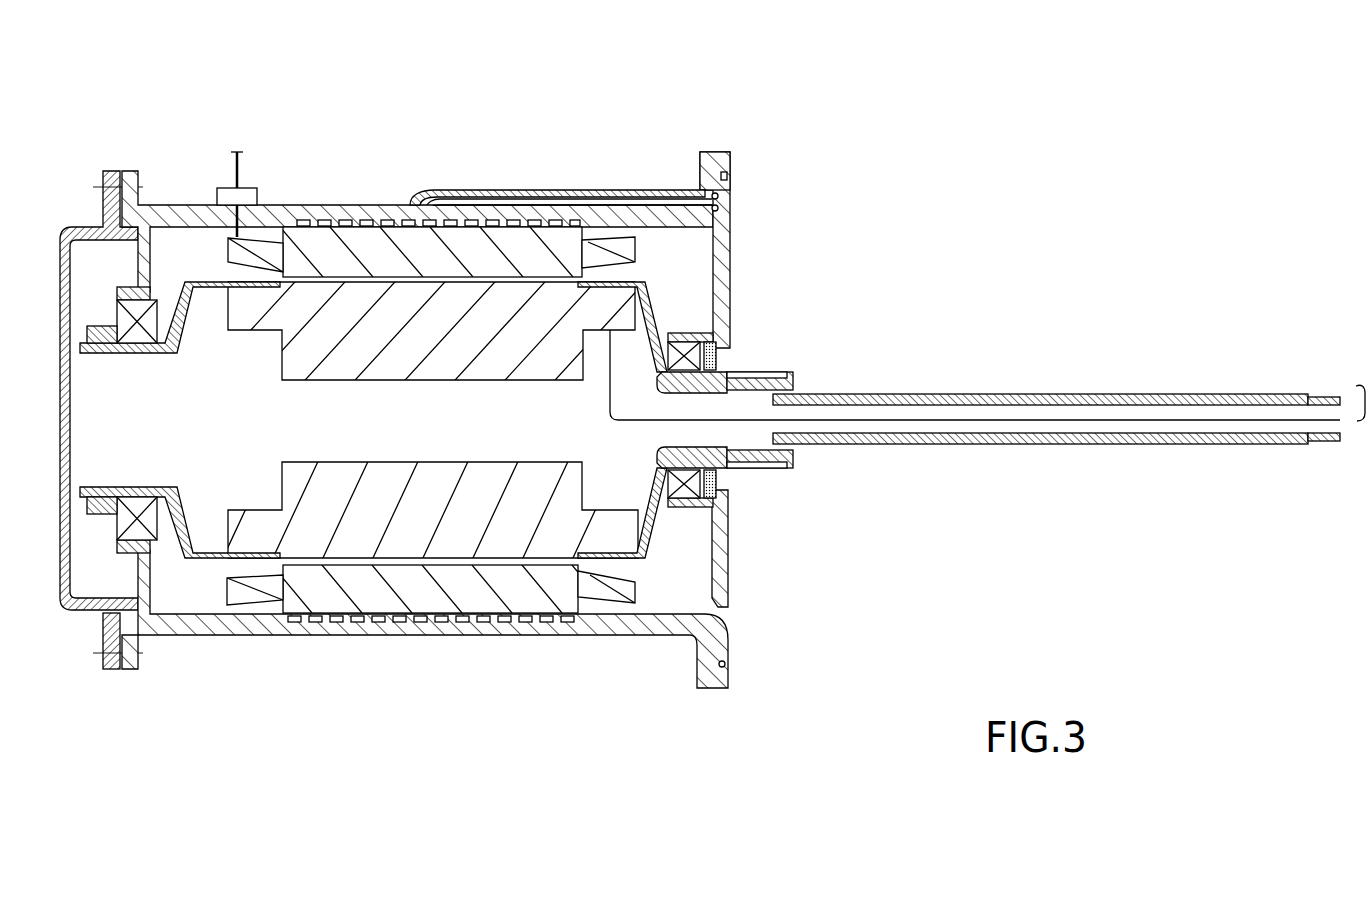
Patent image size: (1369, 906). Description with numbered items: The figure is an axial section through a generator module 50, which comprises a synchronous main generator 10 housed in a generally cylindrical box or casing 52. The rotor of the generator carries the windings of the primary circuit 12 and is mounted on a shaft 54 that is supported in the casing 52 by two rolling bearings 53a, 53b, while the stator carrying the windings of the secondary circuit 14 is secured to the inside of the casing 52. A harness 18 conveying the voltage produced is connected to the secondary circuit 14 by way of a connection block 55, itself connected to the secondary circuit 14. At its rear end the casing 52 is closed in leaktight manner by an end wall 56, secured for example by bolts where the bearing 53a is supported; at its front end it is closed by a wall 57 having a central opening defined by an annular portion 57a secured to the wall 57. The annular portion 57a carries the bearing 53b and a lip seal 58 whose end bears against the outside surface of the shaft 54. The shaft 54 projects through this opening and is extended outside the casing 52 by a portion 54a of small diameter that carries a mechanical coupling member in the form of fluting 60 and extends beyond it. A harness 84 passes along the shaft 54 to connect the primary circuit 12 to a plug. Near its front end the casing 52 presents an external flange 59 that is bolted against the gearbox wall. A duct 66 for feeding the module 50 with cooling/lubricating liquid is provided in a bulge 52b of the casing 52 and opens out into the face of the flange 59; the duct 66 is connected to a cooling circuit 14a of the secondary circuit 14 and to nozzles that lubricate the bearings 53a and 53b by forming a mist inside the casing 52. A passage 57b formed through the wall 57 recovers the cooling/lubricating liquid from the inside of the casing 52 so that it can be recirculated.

The synchronous main generator 10 is at (210, 580).
The primary circuit 12 is at (478, 352).
The secondary circuit 14 is at (442, 605).
The cooling circuit 14a is at (387, 218).
The harness 18 is at (232, 172).
The generator module 50 is at (399, 138).
The casing 52 is at (644, 214).
The bulge 52b is at (485, 191).
The rolling bearing 53a is at (133, 333).
The rolling bearing 53b is at (690, 397).
The shaft 54 is at (655, 340).
The portion of small diameter 54a is at (935, 392).
The connection block 55 is at (250, 190).
The end wall 56 is at (70, 420).
The wall 57 is at (731, 250).
The annular portion 57a is at (688, 333).
The passage 57b is at (722, 614).
The lip seal 58 is at (717, 366).
The external flange 59 is at (714, 152).
The fluting 60 is at (787, 376).
The duct 66 is at (525, 200).
The harness 84 is at (607, 410).